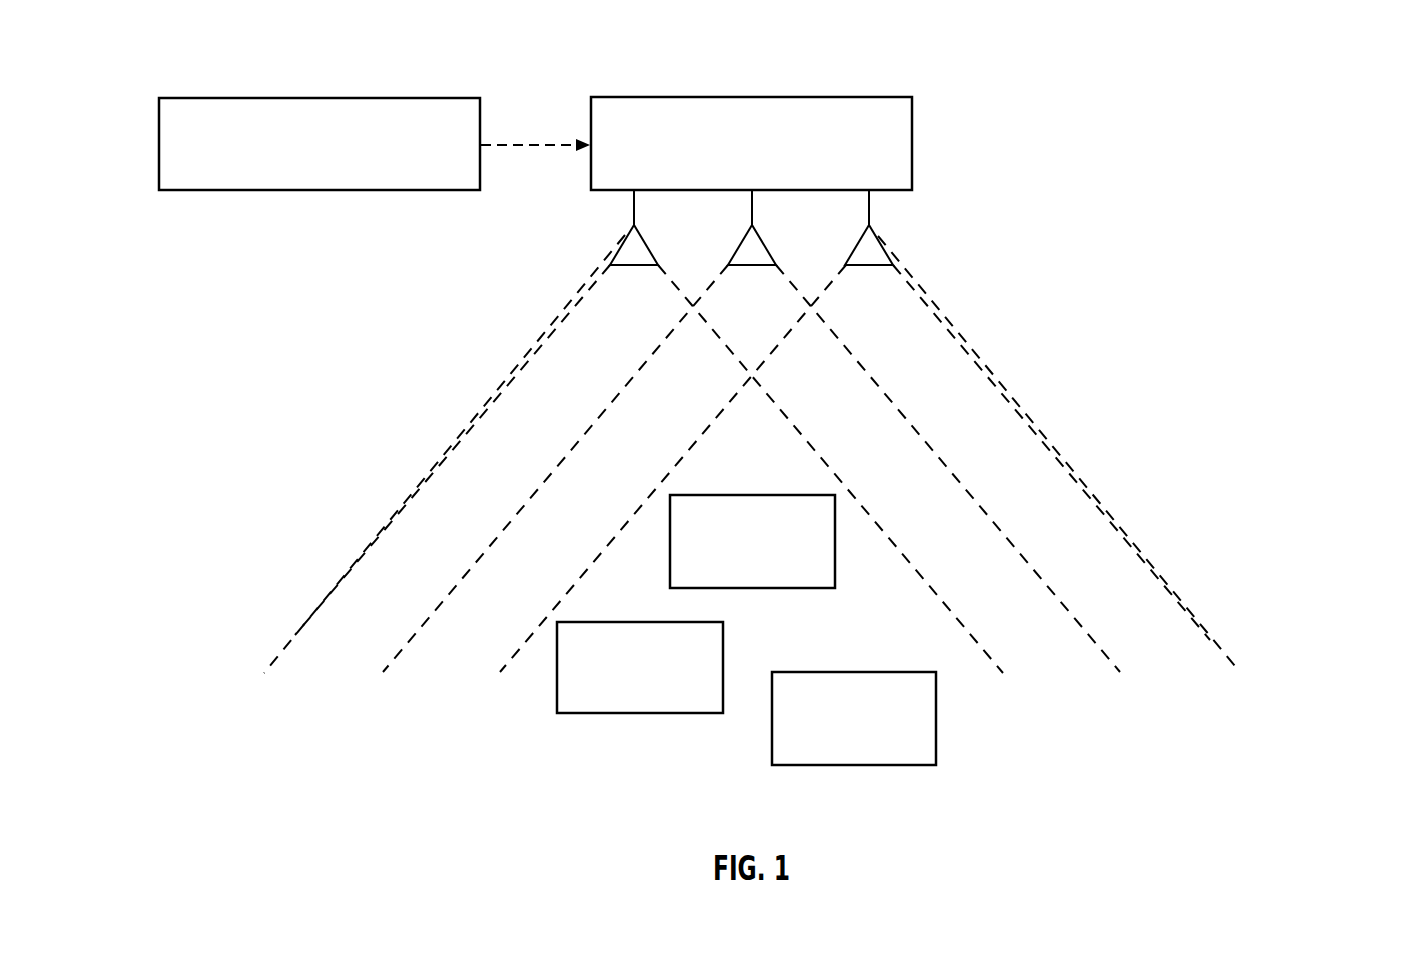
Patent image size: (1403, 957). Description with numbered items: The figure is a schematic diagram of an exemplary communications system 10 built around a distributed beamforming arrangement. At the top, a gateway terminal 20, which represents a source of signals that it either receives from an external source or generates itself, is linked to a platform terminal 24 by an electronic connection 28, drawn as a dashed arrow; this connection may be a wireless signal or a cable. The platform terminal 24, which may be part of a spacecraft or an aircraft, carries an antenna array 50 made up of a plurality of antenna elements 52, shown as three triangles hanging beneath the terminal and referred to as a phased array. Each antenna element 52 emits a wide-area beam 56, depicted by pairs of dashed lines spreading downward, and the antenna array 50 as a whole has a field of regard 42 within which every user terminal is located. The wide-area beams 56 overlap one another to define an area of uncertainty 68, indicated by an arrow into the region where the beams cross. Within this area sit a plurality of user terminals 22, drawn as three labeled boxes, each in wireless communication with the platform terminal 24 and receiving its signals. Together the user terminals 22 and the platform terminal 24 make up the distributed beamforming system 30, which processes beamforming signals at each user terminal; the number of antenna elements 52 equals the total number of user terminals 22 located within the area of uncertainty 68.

The communications system 10 is at (1086, 70).
The gateway terminal 20 is at (320, 96).
The user terminal 22 is at (780, 589).
The platform terminal 24 is at (752, 96).
The electronic connection 28 is at (530, 140).
The distributed beamforming system 30 is at (790, 444).
The field of regard 42 is at (1104, 492).
The antenna array 50 is at (766, 223).
The antenna element 52 is at (621, 247).
The wide-area beam 56 is at (1086, 372).
The area of uncertainty 68 is at (895, 618).